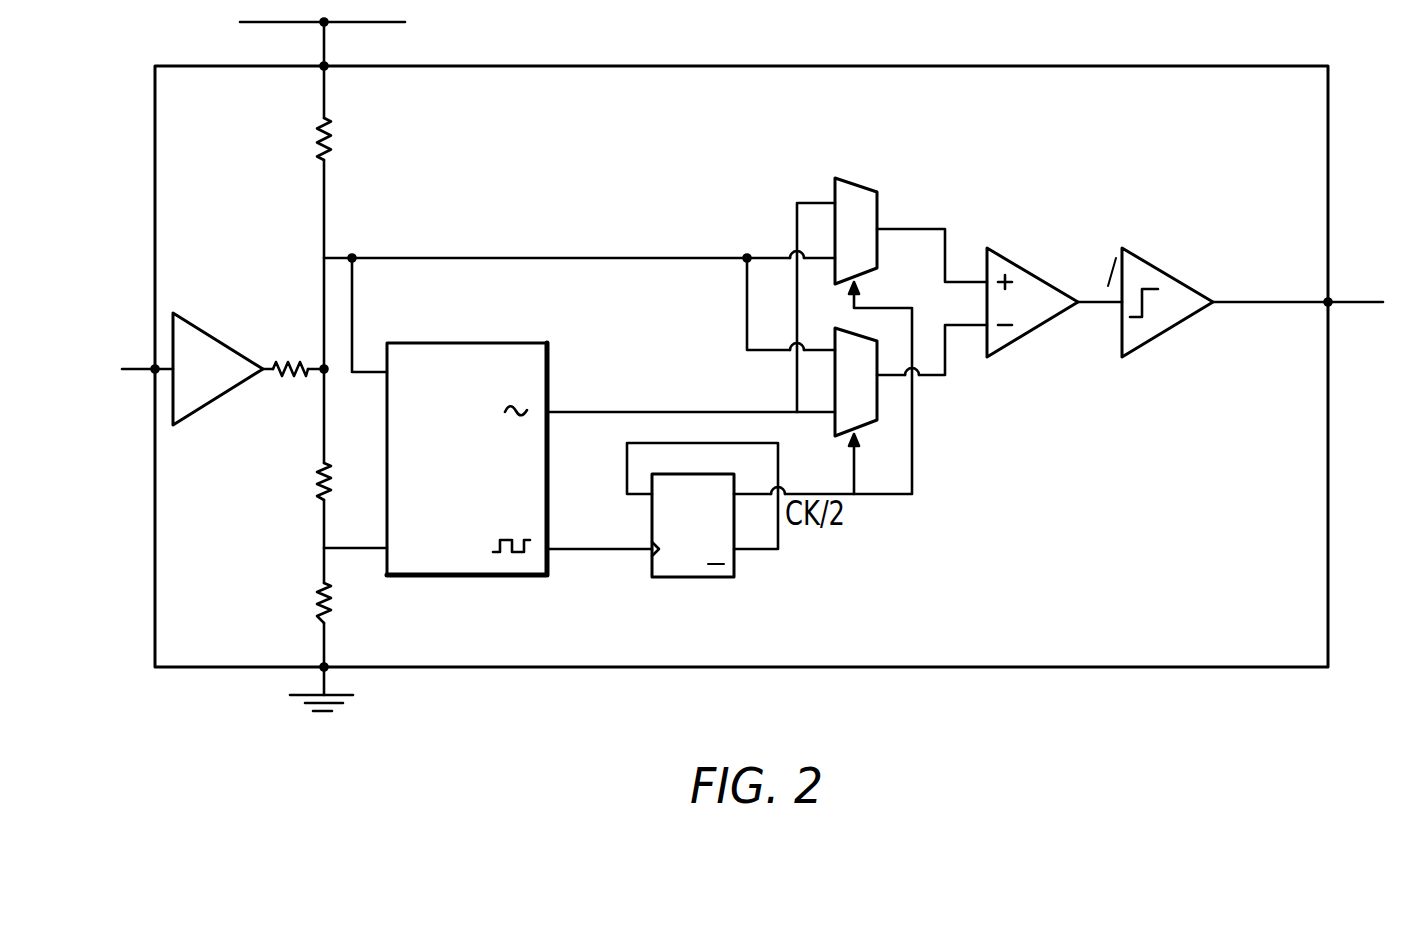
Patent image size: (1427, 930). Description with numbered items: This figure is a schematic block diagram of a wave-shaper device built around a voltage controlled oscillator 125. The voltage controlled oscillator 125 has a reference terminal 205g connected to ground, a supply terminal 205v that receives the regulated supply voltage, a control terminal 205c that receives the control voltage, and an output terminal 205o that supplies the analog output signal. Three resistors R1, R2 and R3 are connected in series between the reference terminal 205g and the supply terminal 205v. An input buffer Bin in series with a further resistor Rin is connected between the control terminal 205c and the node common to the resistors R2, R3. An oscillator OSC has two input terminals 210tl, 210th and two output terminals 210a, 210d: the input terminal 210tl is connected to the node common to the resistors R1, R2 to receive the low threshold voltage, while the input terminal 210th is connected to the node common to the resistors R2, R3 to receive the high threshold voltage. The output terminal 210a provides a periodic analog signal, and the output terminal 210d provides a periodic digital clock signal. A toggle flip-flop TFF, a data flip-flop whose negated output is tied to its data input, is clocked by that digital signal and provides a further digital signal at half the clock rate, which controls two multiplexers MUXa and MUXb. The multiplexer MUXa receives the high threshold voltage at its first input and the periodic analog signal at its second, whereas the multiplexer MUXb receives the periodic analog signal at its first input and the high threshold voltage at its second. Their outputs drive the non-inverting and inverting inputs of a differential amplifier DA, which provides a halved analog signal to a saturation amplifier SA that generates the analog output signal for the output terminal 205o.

The VCO 125 is at (940, 66).
The supply terminal 205v is at (320, 64).
The control terminal 205c is at (157, 366).
The output terminal 205o is at (1330, 305).
The reference terminal 205g is at (328, 672).
The input terminal 210th is at (385, 374).
The input terminal 210tl is at (385, 546).
The output terminal 210a is at (552, 415).
The output terminal 210d is at (550, 552).
The resistor R3 is at (358, 141).
The resistor R2 is at (330, 492).
The resistor R1 is at (332, 604).
The further resistor Rin is at (283, 364).
The input buffer Bin is at (222, 402).
The oscillator OSC is at (465, 577).
The toggle flip-flop TFF is at (690, 580).
The multiplexer MUXa is at (875, 163).
The multiplexer MUXb is at (880, 425).
The differential amplifier DA is at (1015, 338).
The saturation amplifier SA is at (1160, 338).